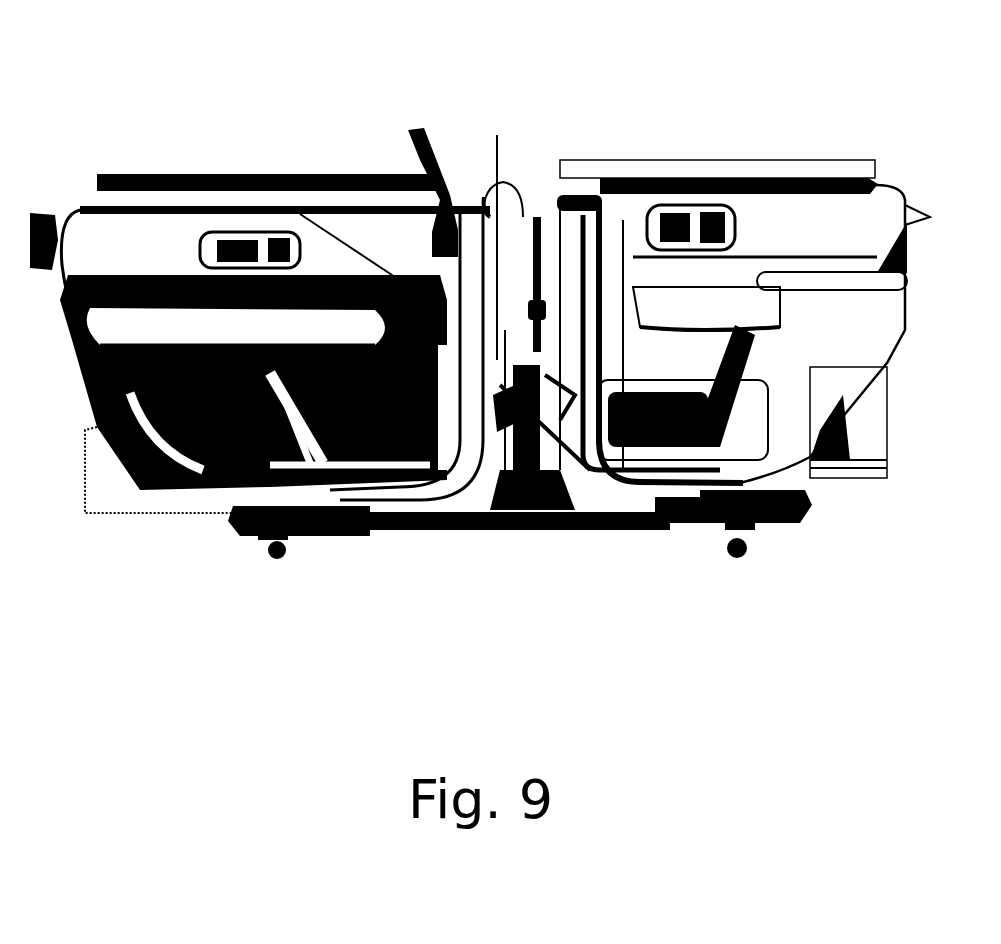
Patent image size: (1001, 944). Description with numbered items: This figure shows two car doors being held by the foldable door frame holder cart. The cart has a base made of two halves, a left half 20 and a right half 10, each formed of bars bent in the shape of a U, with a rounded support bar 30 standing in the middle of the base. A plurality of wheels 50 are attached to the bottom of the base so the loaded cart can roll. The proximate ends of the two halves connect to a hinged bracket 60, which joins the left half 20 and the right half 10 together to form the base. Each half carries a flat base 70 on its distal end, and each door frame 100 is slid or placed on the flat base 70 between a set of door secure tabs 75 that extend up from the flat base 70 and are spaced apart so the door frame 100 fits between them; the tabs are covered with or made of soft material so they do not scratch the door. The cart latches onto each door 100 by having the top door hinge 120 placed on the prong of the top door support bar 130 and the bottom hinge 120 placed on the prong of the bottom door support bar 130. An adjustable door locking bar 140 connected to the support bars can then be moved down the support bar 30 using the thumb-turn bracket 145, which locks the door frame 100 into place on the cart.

The right half 10 is at (800, 512).
The left half 20 is at (248, 532).
The support bar 30 is at (519, 210).
The wheels 50 is at (278, 553).
The hinged bracket 60 is at (537, 530).
The flat base 70 is at (348, 530).
The door secure tabs 75 is at (267, 530).
The door frame 100 is at (178, 222).
The hinges 120 is at (487, 290).
The door support bars 130 is at (540, 310).
The adjustable door locking bars 140 is at (488, 513).
The thumb-turn bracket 145 is at (560, 510).